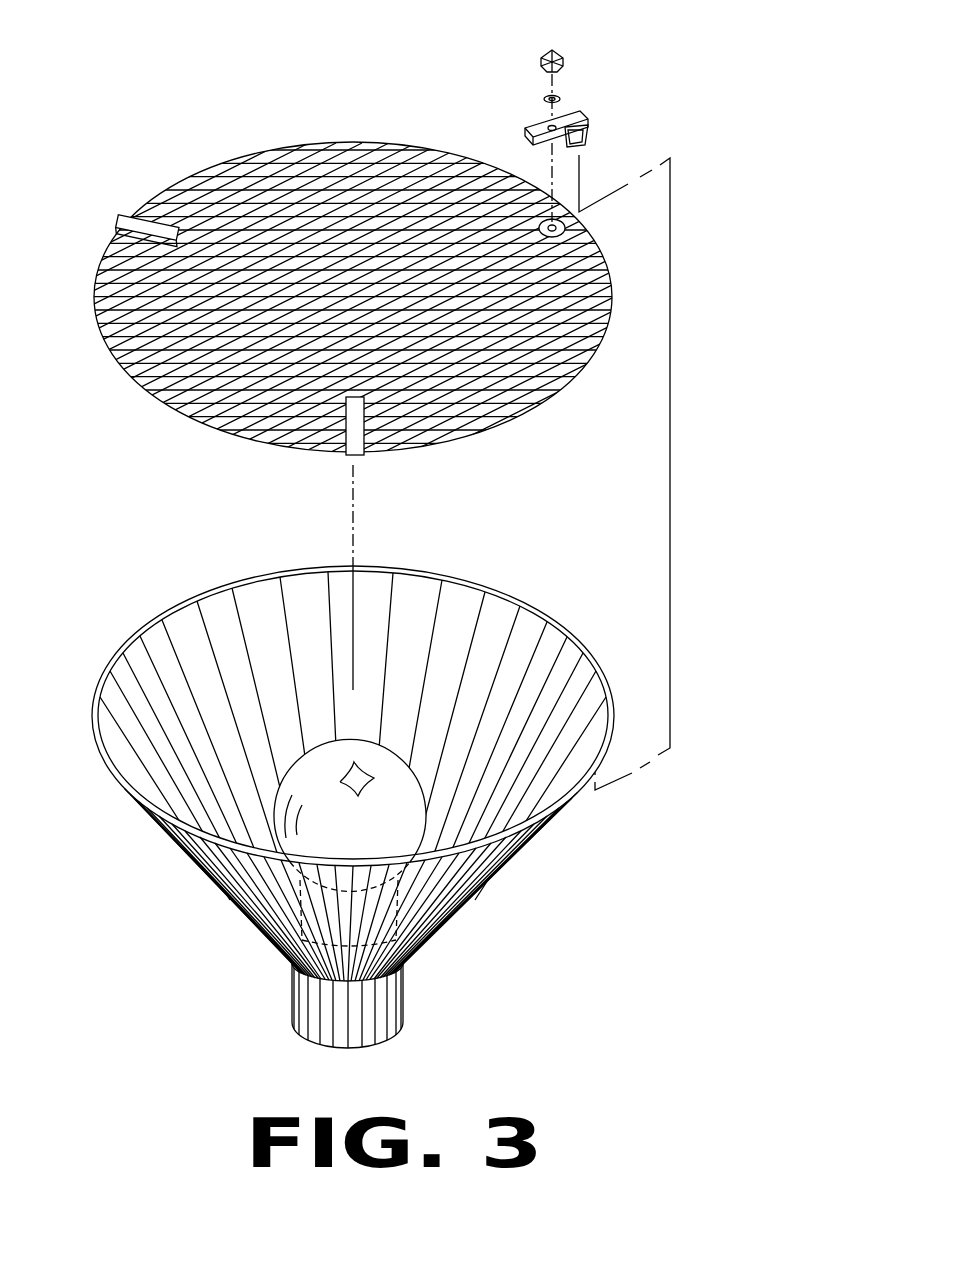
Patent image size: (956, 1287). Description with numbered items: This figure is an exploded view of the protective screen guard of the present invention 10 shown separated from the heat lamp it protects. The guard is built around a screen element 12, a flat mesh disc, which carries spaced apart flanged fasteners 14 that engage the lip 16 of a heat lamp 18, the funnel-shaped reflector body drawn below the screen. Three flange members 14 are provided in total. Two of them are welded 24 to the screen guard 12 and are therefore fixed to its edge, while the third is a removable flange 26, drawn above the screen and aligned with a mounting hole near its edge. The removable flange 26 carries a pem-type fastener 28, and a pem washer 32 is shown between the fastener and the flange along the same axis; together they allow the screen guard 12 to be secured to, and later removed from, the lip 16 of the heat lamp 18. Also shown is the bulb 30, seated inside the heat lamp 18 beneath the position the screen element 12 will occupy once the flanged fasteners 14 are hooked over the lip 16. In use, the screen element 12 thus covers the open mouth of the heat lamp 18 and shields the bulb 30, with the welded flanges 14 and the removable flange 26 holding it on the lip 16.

The protective screen guard 10 is at (478, 526).
The screen element 12 is at (478, 249).
The flanged fasteners 14 is at (123, 215).
The lip 16 is at (413, 776).
The heat lamp 18 is at (215, 873).
The weld 24 is at (218, 186).
The removable flange 26 is at (590, 119).
The pem-type fastener 28 is at (548, 50).
The bulb 30 is at (330, 757).
The pem washer 32 is at (560, 100).